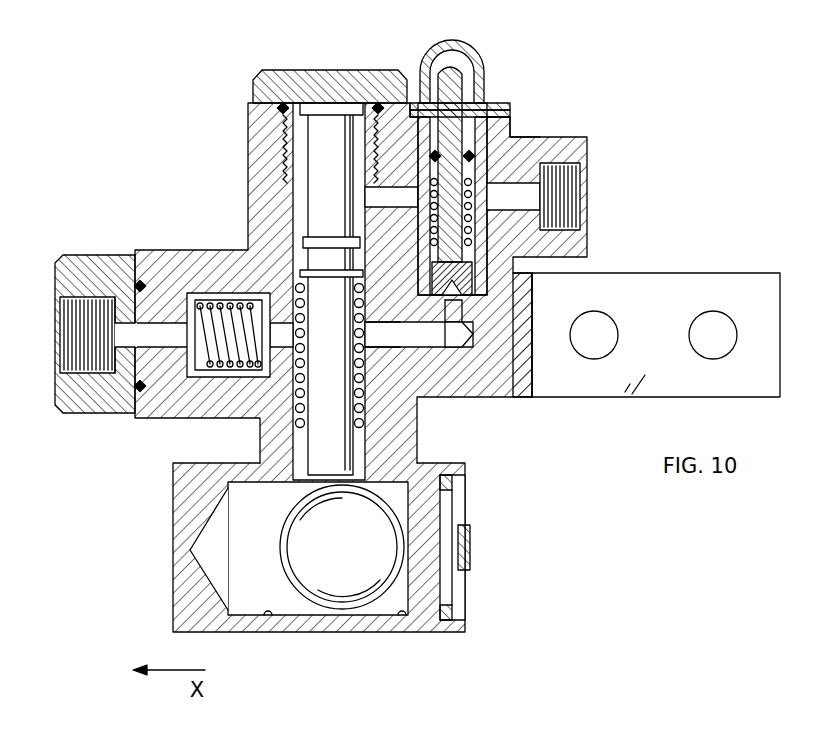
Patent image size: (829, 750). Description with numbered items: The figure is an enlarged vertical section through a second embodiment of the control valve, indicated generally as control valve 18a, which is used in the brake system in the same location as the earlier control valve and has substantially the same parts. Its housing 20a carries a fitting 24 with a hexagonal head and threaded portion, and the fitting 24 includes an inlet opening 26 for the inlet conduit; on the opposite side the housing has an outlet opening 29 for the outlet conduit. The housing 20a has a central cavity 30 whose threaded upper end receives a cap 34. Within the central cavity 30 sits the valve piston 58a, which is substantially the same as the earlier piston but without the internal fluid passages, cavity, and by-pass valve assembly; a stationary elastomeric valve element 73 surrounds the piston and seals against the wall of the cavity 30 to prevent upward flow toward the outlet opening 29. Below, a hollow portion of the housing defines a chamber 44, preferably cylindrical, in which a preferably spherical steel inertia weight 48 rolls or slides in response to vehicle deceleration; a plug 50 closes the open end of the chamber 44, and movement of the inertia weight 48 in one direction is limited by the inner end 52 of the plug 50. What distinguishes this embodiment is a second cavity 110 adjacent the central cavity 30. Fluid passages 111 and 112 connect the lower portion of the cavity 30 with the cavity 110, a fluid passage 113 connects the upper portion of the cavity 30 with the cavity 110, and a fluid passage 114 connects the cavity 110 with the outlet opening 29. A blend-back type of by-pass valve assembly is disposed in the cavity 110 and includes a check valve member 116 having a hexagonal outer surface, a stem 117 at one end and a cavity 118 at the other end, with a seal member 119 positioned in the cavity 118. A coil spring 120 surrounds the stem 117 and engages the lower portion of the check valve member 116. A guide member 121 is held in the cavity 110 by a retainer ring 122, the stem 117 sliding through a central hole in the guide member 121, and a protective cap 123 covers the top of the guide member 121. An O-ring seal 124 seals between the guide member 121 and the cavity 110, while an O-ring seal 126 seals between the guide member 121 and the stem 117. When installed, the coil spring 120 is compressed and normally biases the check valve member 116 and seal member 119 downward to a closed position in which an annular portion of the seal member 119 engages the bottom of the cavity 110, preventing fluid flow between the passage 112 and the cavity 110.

The control valve 18a is at (137, 472).
The housing 20a is at (248, 152).
The fitting 24 is at (88, 414).
The inlet opening 26 is at (60, 368).
The outlet opening 29 is at (578, 232).
The central cavity 30 is at (293, 405).
The cap 34 is at (272, 69).
The chamber 44 is at (270, 616).
The inertia weight 48 is at (332, 553).
The plug 50 is at (471, 547).
The inner end of plug 52 is at (401, 616).
The valve piston 58a is at (318, 350).
The elastomeric valve element 73 is at (290, 262).
The second cavity 110 is at (378, 228).
The fluid passage 111 is at (398, 348).
The fluid passage 112 is at (455, 347).
The fluid passage 113 is at (372, 199).
The fluid passage 114 is at (572, 204).
The check valve member 116 is at (522, 300).
The stem 117 is at (470, 70).
The cavity 118 is at (432, 288).
The seal member 119 is at (470, 308).
The coil spring 120 is at (472, 238).
The guide member 121 is at (512, 136).
The retainer ring 122 is at (500, 103).
The protective cap 123 is at (452, 40).
The O-ring seal 124 is at (508, 114).
The O-ring seal 126 is at (476, 157).